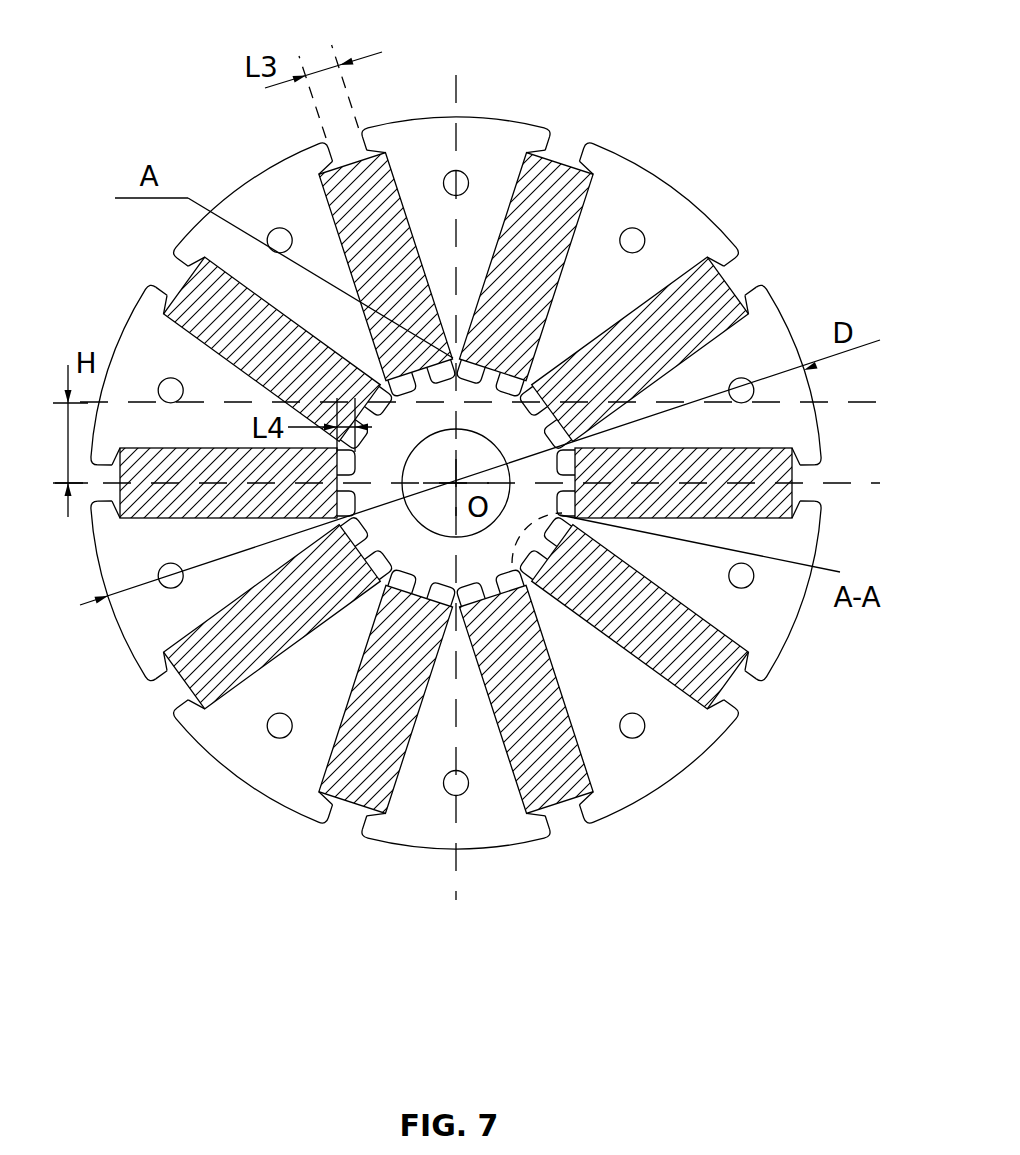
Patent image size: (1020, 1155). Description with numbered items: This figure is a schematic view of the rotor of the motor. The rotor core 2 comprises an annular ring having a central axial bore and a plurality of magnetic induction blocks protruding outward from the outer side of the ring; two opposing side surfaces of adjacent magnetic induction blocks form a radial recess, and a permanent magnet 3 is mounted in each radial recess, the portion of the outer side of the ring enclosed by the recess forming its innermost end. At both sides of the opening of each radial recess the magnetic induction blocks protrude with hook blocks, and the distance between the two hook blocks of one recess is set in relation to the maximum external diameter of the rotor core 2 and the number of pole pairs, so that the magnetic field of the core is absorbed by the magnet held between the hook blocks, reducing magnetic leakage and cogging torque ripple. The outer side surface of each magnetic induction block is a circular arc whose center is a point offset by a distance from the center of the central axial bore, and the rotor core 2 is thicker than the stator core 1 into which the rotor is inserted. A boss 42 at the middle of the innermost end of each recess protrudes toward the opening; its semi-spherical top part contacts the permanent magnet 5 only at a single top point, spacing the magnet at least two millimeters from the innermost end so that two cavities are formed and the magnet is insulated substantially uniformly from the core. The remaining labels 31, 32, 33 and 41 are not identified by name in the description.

The stator core 1 is at (433, 500).
The rotor core 2 is at (451, 503).
The permanent magnet 3 is at (466, 503).
The outer arc surface of magnetic conductive block 31 is at (271, 803).
The side wall of magnet slot 32 is at (722, 717).
The rivet hole 33 is at (743, 578).
The first limiting portion 41 is at (750, 683).
The boss 42 is at (550, 403).
The permanent magnet 5 is at (202, 484).